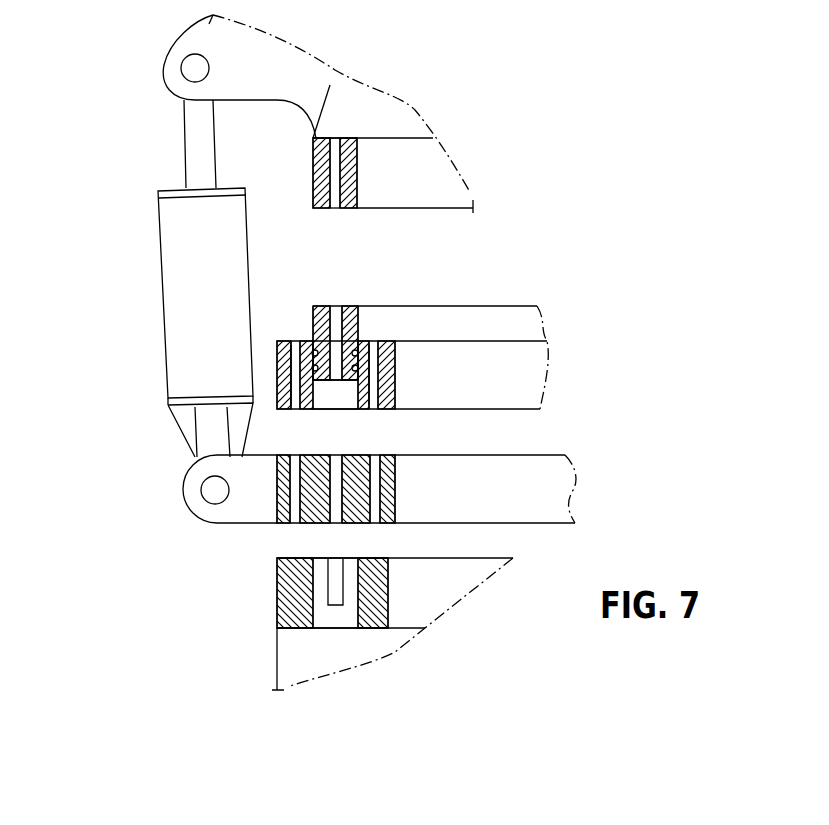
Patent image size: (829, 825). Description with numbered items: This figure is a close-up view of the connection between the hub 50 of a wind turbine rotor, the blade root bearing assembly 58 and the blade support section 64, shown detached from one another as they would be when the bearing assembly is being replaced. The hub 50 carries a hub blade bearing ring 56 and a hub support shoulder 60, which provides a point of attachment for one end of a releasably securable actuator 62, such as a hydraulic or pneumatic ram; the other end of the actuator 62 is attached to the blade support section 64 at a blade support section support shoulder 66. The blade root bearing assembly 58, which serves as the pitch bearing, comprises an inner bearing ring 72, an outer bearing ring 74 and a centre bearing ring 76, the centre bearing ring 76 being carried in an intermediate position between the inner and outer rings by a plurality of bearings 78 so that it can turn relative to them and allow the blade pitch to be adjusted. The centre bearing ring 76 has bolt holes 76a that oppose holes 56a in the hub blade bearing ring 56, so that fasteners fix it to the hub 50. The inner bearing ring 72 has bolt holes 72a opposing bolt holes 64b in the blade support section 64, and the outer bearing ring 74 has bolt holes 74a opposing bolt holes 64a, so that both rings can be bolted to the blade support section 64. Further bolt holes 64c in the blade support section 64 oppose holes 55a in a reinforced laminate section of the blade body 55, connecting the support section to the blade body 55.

The hub 50 is at (397, 108).
The blade body section 55 is at (400, 650).
The holes in blade body 55a is at (330, 602).
The hub blade bearing ring 56 is at (440, 183).
The holes on hub blade bearing ring 56a is at (318, 166).
The blade root bearing assembly 58 is at (530, 395).
The hub support shoulder 60 is at (165, 70).
The actuator 62 is at (176, 297).
The blade support section 64 is at (555, 490).
The bolt holes in blade support section 64a is at (290, 495).
The bolt holes in blade support section 64b is at (380, 500).
The further bolt holes 64c is at (335, 520).
The blade support section support shoulder 66 is at (196, 490).
The inner bearing ring 72 is at (385, 340).
The bolt holes in inner bearing ring 72a is at (393, 380).
The outer bearing ring 74 is at (283, 340).
The bolt holes in outer bearing ring 74a is at (293, 393).
The centre bearing ring 76 is at (350, 306).
The bolt holes in centre bearing ring 76a is at (333, 373).
The bearings 78 is at (315, 346).